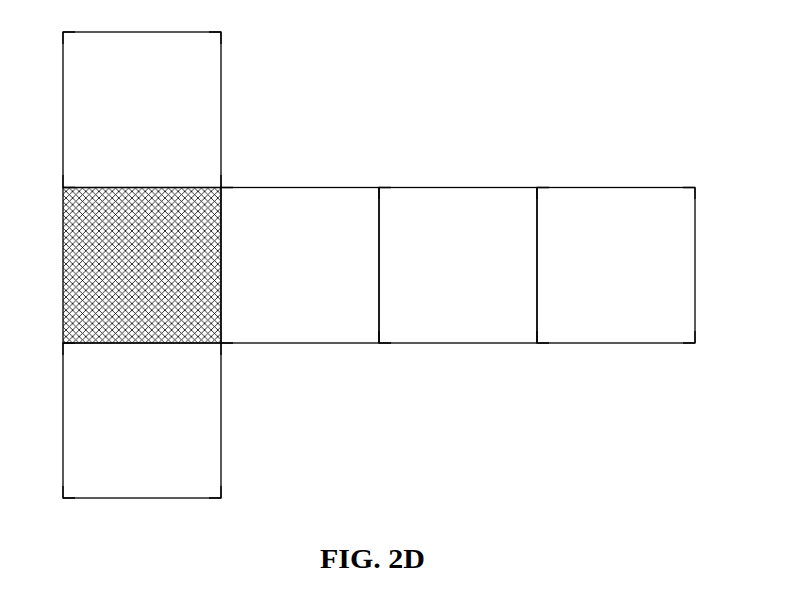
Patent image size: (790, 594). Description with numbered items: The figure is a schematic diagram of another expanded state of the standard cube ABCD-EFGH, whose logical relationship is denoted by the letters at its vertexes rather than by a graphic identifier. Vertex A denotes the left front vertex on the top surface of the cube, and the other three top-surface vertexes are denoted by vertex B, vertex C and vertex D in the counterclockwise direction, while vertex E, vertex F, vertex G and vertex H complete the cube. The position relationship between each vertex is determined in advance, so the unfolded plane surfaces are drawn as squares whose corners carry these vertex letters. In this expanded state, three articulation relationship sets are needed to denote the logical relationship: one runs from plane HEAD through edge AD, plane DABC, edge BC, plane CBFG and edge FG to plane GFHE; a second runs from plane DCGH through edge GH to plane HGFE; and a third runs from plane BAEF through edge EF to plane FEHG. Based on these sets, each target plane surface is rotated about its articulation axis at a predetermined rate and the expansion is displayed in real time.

The vertex A is at (287, 419).
The vertex B is at (300, 419).
The vertex C is at (300, 101).
The vertex D is at (287, 101).
The vertex E is at (371, 356).
The vertex F is at (233, 362).
The vertex G is at (235, 169).
The vertex H is at (371, 174).